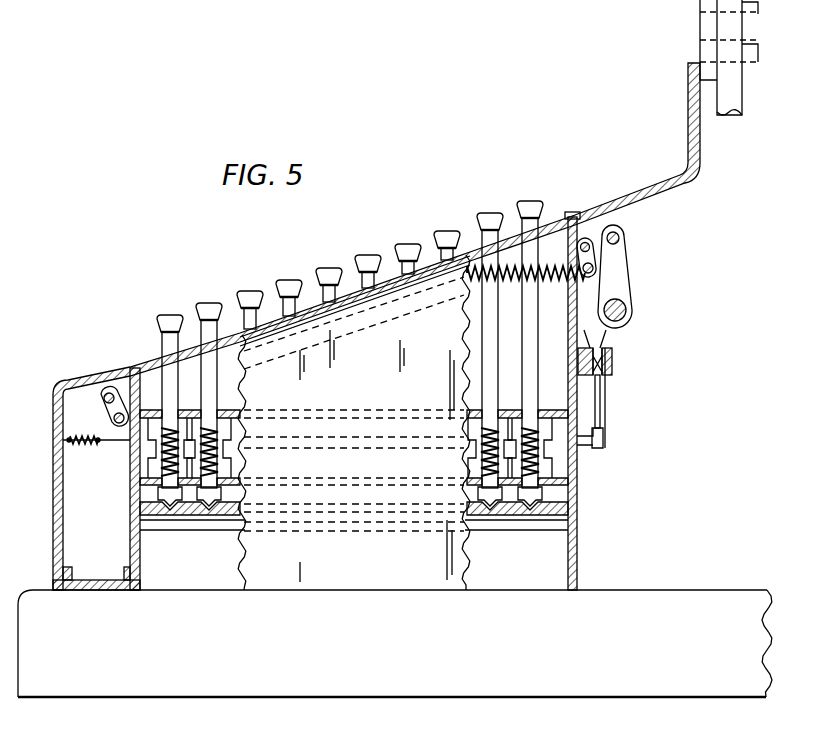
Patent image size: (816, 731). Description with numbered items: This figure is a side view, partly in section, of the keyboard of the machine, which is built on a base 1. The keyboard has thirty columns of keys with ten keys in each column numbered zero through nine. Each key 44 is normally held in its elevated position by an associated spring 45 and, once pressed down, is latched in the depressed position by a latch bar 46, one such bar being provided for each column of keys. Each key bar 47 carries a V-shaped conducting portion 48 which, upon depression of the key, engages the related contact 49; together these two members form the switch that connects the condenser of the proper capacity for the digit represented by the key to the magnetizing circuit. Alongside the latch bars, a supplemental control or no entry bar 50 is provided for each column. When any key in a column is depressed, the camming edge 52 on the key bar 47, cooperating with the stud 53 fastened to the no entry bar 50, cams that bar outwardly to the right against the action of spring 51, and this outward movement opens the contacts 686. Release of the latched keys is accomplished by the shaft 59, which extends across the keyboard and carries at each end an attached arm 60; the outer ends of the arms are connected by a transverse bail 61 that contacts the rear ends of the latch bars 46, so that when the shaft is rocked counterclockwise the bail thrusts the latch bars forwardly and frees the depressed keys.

The base 1 is at (638, 598).
The key 44 is at (538, 207).
The spring 45 is at (500, 428).
The latch bar 46 is at (600, 206).
The key bar 47 is at (530, 345).
The V-shaped conducting portion 48 is at (543, 495).
The contact 49 is at (567, 508).
The no entry bar 50 is at (589, 443).
The spring 51 is at (85, 448).
The camming edge 52 is at (542, 435).
The stud 53 is at (578, 462).
The shaft 59 is at (628, 305).
The arm 60 is at (626, 266).
The transverse bail 61 is at (622, 240).
The contacts 686 is at (598, 410).